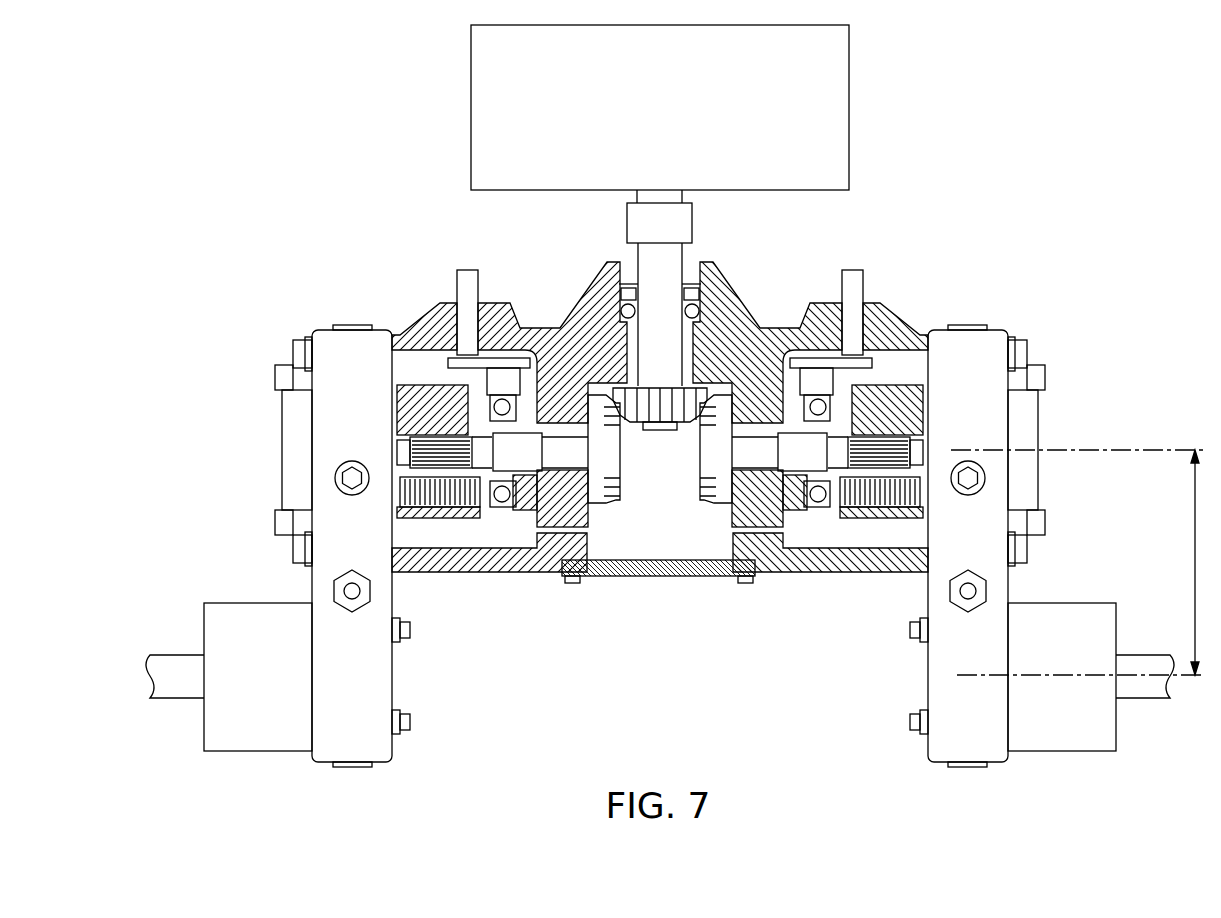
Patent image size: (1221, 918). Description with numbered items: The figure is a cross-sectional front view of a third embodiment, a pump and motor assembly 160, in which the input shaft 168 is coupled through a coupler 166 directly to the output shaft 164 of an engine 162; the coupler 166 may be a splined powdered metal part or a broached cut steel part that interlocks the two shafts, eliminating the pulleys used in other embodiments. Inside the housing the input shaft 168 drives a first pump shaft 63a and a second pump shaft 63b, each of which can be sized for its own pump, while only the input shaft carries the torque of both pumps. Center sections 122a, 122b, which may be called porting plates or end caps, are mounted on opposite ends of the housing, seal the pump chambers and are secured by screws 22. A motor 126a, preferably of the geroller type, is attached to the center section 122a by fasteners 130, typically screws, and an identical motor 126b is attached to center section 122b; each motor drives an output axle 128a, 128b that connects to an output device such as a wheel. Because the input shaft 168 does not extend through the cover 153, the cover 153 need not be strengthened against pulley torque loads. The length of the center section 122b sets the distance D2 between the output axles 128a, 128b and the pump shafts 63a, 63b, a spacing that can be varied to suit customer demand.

The pump and motor assembly 160 is at (250, 120).
The engine 162 is at (641, 122).
The output shaft 164 is at (684, 194).
The coupler 166 is at (641, 235).
The input shaft 168 is at (647, 251).
The first pump shaft 63a is at (502, 464).
The second pump shaft 63b is at (786, 464).
The screws 22 is at (293, 549).
The center section 122a is at (329, 550).
The center section 122b is at (946, 550).
The motor 126a is at (234, 711).
The motor 126b is at (1039, 711).
The output axle 128a is at (178, 702).
The output axle 128b is at (1140, 702).
The fasteners 130 is at (411, 722).
The cover 153 is at (677, 578).
The distance D2 is at (1080, 562).